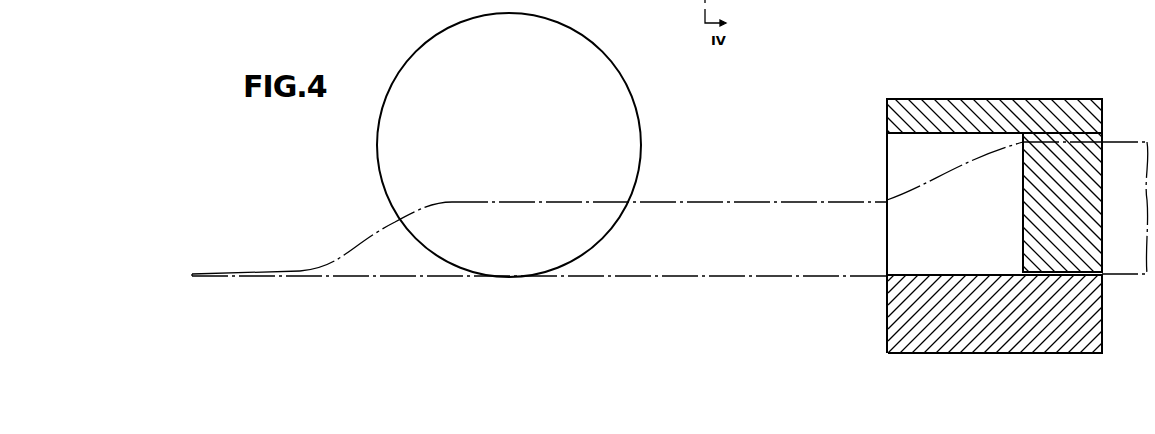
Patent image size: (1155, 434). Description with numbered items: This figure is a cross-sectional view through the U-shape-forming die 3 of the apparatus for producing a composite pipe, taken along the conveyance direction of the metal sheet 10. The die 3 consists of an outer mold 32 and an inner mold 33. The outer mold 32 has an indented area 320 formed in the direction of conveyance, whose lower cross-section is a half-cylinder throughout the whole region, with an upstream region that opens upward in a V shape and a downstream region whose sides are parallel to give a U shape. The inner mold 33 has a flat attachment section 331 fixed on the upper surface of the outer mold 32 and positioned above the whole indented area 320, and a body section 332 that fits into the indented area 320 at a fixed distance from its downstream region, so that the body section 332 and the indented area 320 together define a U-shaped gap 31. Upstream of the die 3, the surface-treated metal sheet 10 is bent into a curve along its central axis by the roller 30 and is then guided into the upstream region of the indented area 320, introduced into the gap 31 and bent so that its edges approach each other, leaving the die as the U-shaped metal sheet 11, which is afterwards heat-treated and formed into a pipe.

The U-shape-forming die 3 is at (949, 217).
The metal sheet 10 is at (345, 268).
The U-shaped metal sheet 11 is at (1142, 272).
The roller 30 is at (645, 145).
The gap 31 is at (1062, 268).
The outer mold 32 is at (1023, 335).
The inner mold 33 is at (994, 217).
The indented area 320 is at (892, 157).
The attachment section 331 is at (1005, 98).
The body section 332 is at (1048, 180).